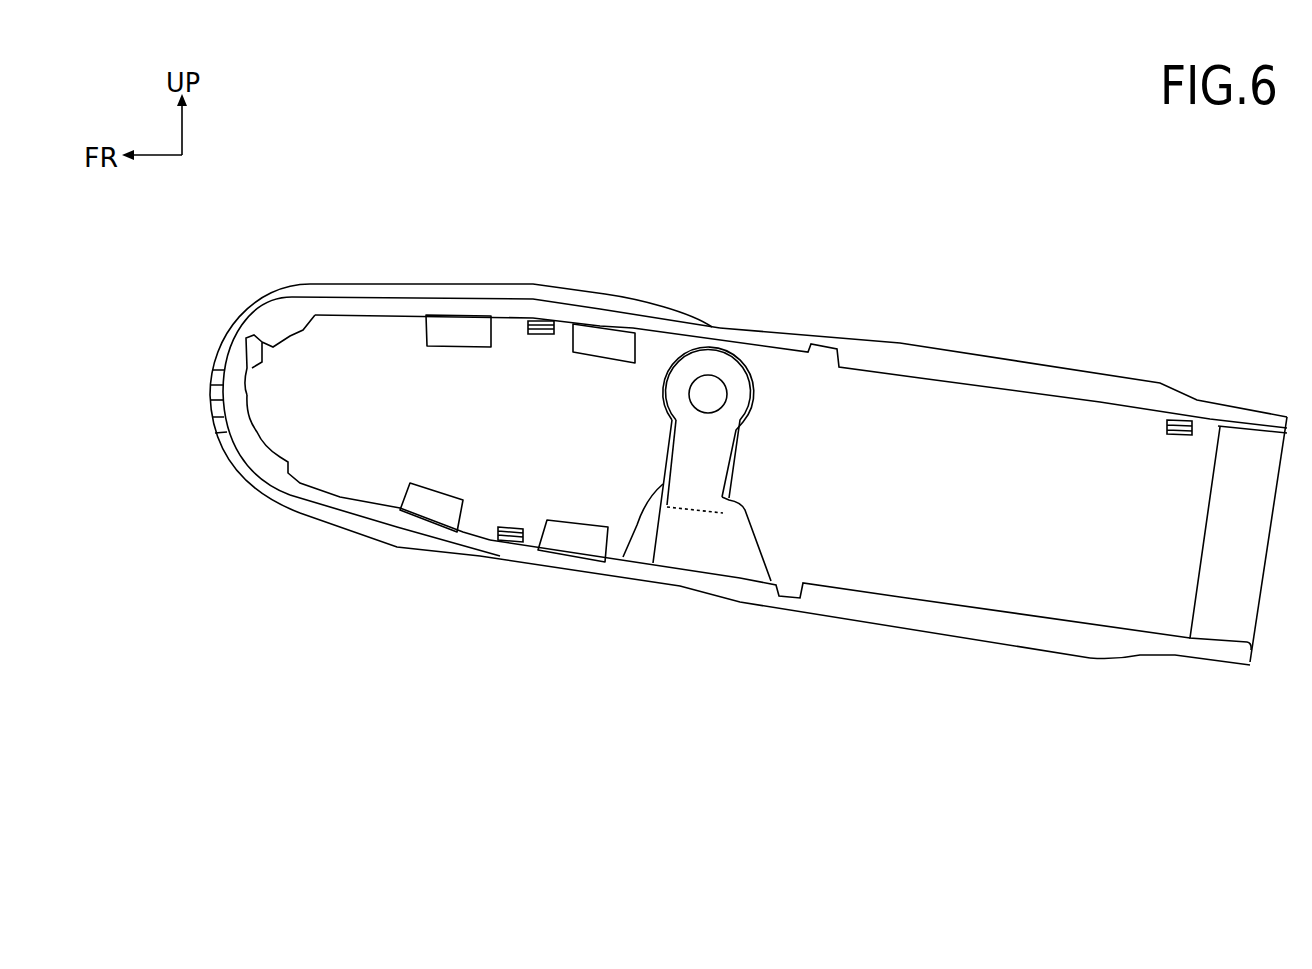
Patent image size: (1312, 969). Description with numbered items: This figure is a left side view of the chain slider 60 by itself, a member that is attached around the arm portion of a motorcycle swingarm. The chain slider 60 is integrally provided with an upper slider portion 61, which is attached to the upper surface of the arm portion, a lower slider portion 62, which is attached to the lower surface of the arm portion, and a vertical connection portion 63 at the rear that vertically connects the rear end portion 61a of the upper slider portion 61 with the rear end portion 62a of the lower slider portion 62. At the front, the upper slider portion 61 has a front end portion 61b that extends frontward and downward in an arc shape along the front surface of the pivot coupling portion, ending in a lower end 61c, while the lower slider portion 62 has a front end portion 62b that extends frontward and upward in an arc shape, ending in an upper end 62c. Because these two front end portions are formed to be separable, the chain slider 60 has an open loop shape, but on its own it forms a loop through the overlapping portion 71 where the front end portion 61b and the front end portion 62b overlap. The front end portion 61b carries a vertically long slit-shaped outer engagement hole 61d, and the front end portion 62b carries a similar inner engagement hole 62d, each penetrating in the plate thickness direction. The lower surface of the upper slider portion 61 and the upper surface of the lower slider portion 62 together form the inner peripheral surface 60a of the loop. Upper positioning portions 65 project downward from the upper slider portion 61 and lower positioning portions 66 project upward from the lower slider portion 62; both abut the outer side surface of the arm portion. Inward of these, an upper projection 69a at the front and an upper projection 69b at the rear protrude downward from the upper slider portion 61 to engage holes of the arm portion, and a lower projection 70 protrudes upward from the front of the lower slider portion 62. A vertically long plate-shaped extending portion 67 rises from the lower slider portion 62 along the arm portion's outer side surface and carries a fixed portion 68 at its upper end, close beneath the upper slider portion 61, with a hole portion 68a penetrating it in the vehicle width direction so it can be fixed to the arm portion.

The chain slider 60 is at (696, 191).
The inner peripheral surface 60a is at (413, 315).
The upper slider portion 61 is at (823, 316).
The rear end portion of the upper slider portion 61a is at (1245, 406).
The front end portion of the upper slider portion 61b is at (227, 352).
The lower end of the front end portion 61c is at (224, 442).
The outer engagement hole 61d is at (232, 372).
The lower slider portion 62 is at (759, 628).
The rear end portion of the lower slider portion 62a is at (1217, 663).
The front end portion of the lower slider portion 62b is at (208, 421).
The upper end of the front end portion 62c is at (256, 318).
The inner engagement hole 62d is at (242, 387).
The vertical connection portion 63 is at (1197, 570).
The upper positioning portions 65 is at (517, 290).
The lower positioning portions 66 is at (470, 523).
The extending portion 67 is at (662, 484).
The fixed portion 68 is at (684, 350).
The hole portion 68a is at (714, 387).
The upper projection 69a is at (538, 327).
The upper projection 69b is at (1176, 430).
The lower projection 70 is at (493, 541).
The overlapping portion 71 is at (217, 356).